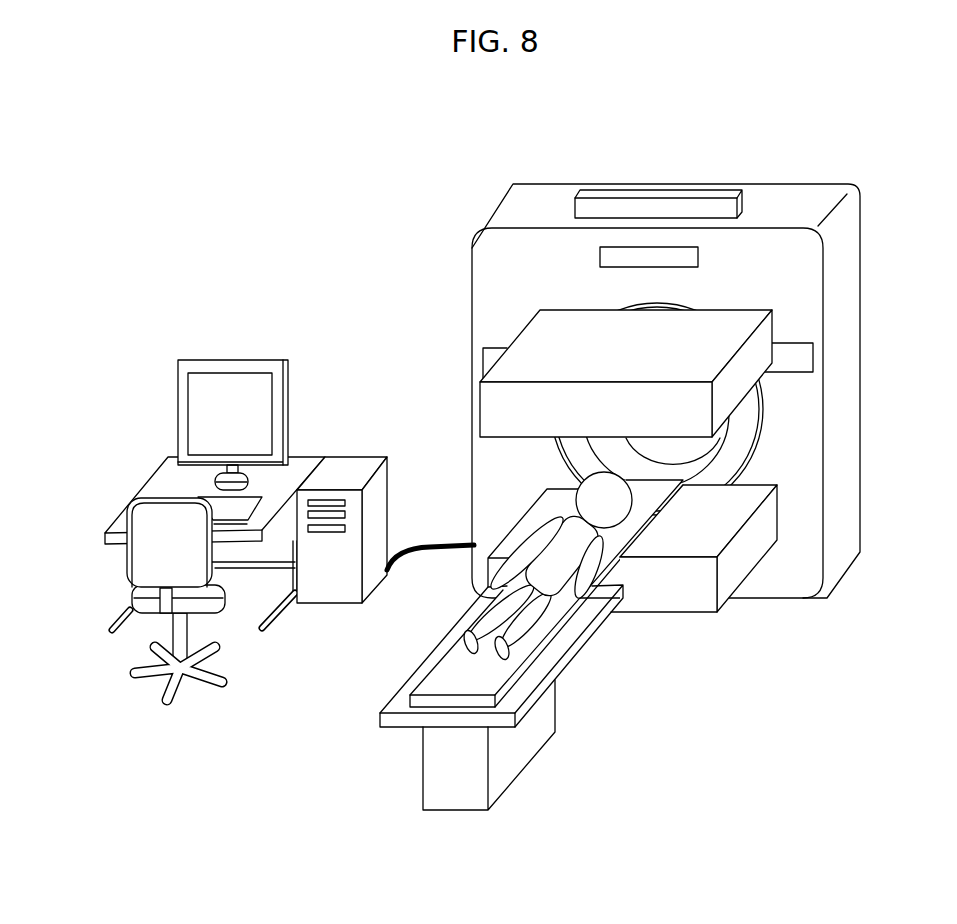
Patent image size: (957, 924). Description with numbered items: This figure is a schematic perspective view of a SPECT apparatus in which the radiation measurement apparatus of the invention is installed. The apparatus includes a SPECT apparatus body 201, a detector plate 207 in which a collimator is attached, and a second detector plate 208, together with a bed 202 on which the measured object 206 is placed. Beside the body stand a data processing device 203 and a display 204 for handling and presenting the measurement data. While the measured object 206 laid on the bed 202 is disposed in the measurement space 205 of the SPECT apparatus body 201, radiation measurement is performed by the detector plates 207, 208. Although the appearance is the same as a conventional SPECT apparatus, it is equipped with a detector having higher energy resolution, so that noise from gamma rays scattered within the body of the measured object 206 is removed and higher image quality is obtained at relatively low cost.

The SPECT apparatus body 201 is at (490, 272).
The bed 202 is at (460, 718).
The data processing device 203 is at (327, 592).
The display 204 is at (222, 397).
The measurement space 205 is at (648, 475).
The measured object 206 is at (567, 555).
The detector plate 207 is at (530, 342).
The detector plate 208 is at (537, 508).